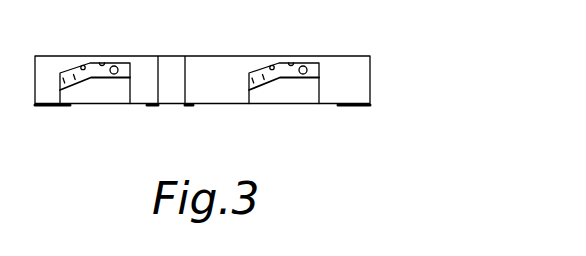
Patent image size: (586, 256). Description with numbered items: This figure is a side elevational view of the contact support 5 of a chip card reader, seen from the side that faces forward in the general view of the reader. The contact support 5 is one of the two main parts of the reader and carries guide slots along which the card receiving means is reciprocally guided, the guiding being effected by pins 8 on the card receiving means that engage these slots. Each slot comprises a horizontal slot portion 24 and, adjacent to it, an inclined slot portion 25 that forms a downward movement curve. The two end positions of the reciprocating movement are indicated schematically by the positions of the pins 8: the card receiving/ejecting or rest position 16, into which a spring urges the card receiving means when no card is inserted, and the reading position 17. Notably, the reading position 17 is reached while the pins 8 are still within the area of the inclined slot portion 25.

The contact support 5 is at (372, 79).
The pin 8 is at (117, 66).
The card receiving/ejecting position 16 is at (113, 86).
The reading position 17 is at (75, 89).
The horizontal slot portion 24 is at (103, 64).
The inclined slot portion 25 is at (83, 66).